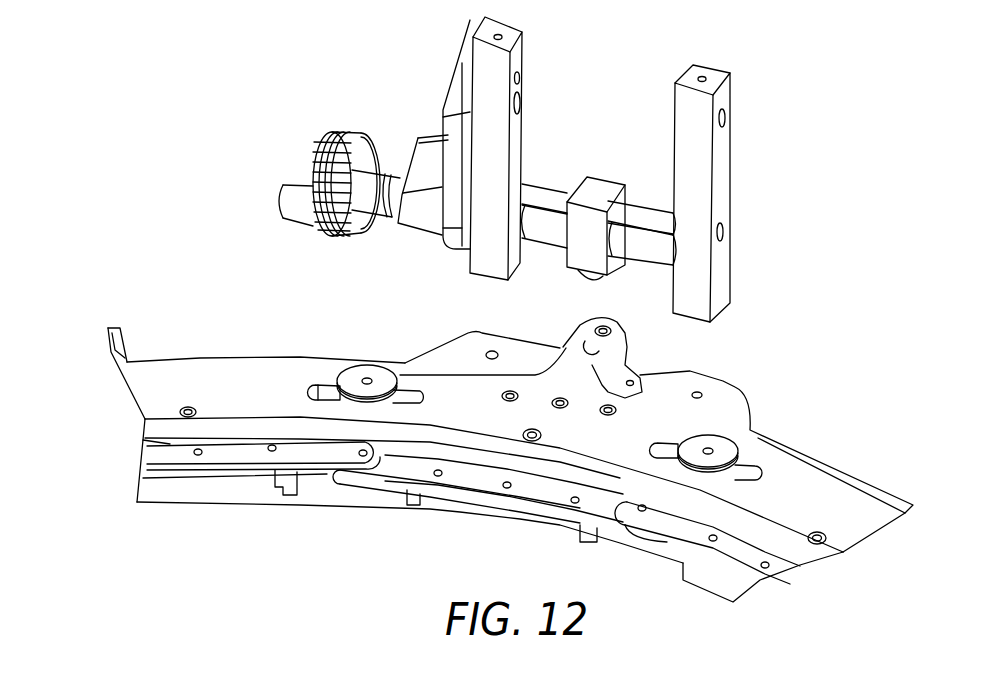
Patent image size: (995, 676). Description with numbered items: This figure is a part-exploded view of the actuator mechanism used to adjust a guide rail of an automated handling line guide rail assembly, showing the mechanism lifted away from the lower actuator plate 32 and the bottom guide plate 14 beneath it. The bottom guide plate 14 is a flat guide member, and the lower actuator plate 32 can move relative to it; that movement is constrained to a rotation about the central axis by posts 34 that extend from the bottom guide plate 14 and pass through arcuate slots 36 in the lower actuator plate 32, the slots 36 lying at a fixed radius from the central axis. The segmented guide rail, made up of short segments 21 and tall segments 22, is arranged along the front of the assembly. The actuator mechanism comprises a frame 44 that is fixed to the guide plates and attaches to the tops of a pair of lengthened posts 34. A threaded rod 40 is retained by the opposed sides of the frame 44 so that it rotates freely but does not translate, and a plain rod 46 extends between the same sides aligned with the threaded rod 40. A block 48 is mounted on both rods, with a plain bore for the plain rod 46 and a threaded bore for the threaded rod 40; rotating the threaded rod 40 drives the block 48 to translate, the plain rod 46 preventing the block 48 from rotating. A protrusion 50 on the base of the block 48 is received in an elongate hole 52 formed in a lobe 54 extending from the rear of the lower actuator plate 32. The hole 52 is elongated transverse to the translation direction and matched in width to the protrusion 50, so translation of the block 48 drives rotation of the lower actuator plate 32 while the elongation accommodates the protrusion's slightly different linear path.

The bottom guide plate 14 is at (720, 390).
The short segment 21 is at (497, 513).
The tall segment 22 is at (222, 490).
The lower actuator plate 32 is at (203, 367).
The post 34 is at (367, 372).
The arcuate slot 36 is at (317, 385).
The threaded rod 40 is at (642, 253).
The frame 44 is at (727, 151).
The plain rod 46 is at (641, 207).
The block 48 is at (598, 182).
The protrusion 50 is at (585, 276).
The elongate hole 52 is at (623, 345).
The lobe 54 is at (577, 358).